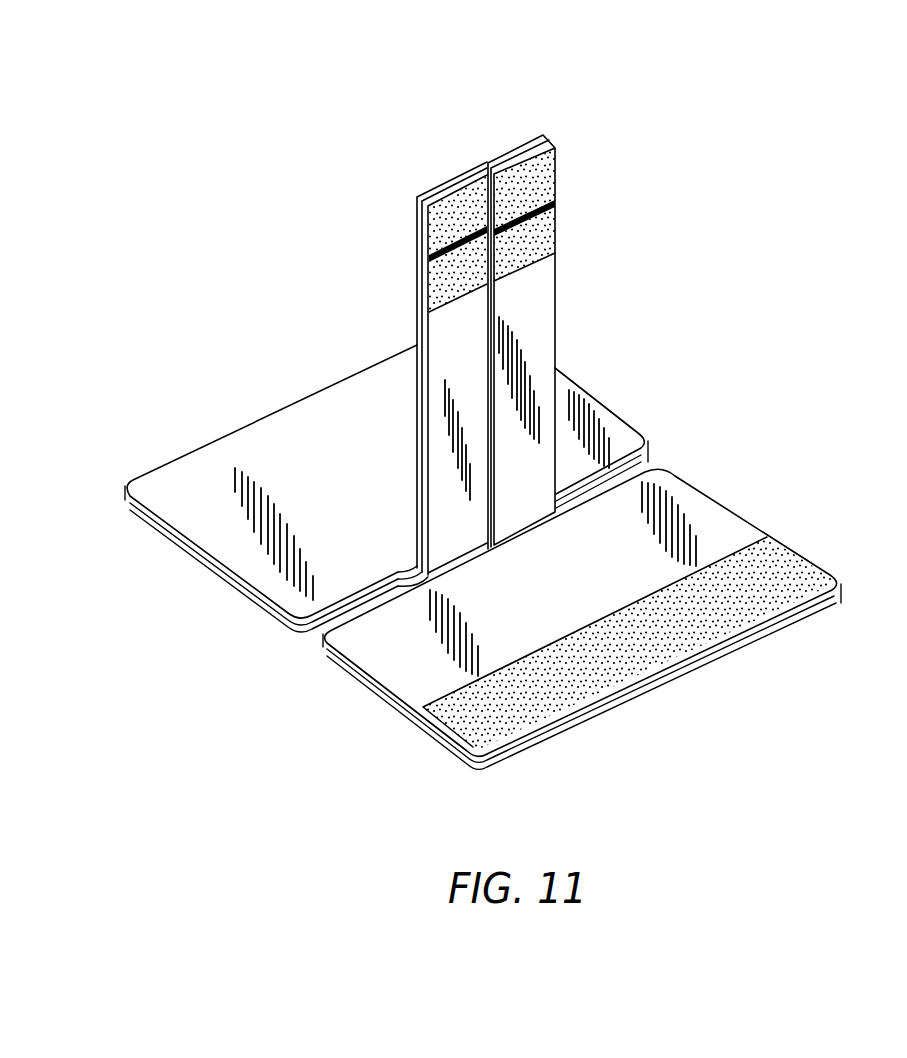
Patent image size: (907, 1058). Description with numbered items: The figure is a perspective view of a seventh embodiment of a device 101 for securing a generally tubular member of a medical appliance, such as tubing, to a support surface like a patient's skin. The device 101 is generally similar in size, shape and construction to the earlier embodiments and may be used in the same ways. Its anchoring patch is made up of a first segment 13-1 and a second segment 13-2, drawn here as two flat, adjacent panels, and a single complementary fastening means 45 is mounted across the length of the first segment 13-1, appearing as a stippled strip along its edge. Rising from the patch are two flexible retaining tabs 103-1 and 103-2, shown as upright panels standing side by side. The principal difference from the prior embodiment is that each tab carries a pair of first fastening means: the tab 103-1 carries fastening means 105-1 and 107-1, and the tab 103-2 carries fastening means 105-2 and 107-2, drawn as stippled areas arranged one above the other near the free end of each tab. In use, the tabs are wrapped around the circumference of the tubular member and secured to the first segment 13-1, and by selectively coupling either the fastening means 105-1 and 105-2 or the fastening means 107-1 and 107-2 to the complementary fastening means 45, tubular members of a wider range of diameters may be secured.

The device 101 is at (192, 332).
The first segment 13-1 is at (588, 600).
The second segment 13-2 is at (606, 403).
The flexible retaining tab 103-1 is at (391, 345).
The flexible retaining tab 103-2 is at (594, 305).
The first fastening means 105-1 is at (442, 215).
The first fastening means 105-2 is at (518, 182).
The first fastening means 107-1 is at (443, 278).
The first fastening means 107-2 is at (536, 247).
The complementary fastening means 45 is at (578, 645).